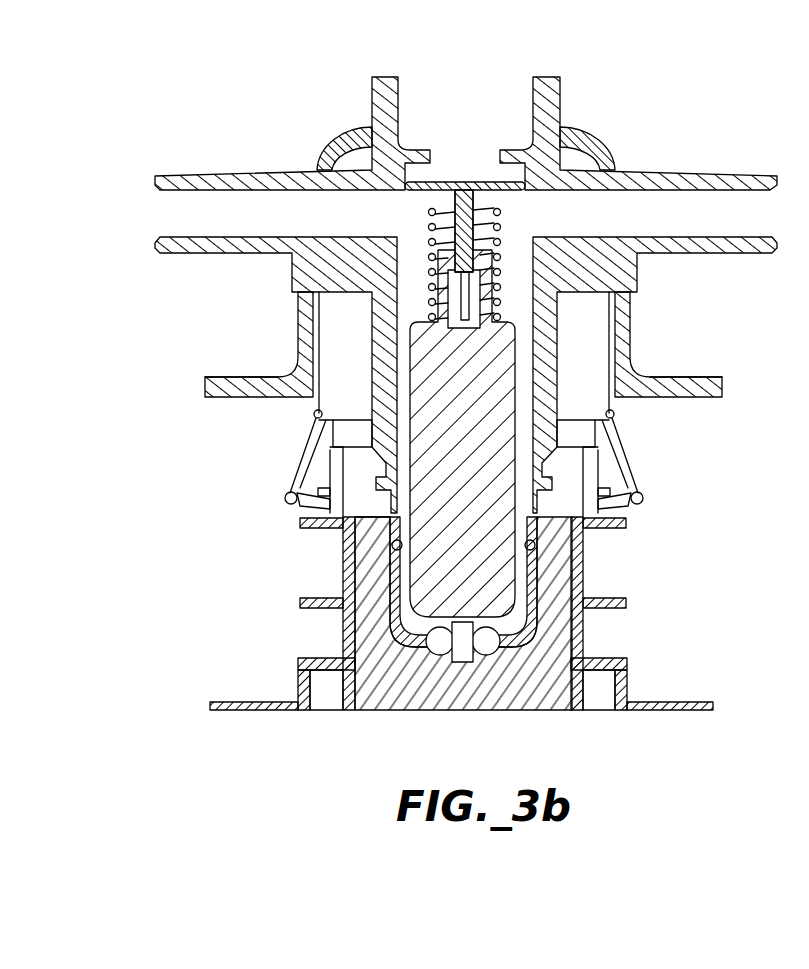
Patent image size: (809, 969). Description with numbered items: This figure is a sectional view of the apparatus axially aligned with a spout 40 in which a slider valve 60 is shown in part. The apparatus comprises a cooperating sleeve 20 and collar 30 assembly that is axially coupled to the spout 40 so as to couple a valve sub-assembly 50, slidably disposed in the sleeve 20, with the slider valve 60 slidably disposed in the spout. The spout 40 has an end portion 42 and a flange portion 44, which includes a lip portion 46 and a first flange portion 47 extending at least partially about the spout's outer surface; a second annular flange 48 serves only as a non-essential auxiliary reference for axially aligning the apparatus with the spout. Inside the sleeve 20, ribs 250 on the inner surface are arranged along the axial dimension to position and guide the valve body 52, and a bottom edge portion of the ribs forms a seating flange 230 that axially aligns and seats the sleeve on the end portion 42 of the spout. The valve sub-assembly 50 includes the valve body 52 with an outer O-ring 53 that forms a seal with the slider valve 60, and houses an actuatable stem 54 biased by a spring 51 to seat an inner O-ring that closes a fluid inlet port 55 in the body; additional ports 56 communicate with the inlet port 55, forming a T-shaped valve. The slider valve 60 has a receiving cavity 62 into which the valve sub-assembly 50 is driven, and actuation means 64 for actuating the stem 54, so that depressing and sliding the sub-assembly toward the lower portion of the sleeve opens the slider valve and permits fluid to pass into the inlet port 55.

The sleeve 20 is at (608, 145).
The collar 30 is at (632, 345).
The spout 40 is at (585, 622).
The end portion 42 is at (315, 414).
The flange portion 44 is at (302, 459).
The lip portion 46 is at (600, 470).
The first flange portion 47 is at (325, 495).
The second annular flange 48 is at (318, 528).
The valve sub-assembly 50 is at (622, 265).
The spring 51 is at (430, 235).
The valve body 52 is at (382, 303).
The outer O-ring 53 is at (385, 545).
The actuatable stem 54 is at (440, 373).
The fluid inlet port 55 is at (478, 652).
The ports 56 is at (215, 168).
The slider valve 60 is at (545, 705).
The receiving cavity 62 is at (397, 623).
The actuation means 64 is at (462, 650).
The seating flange 230 is at (595, 437).
The ribs 250 is at (330, 340).